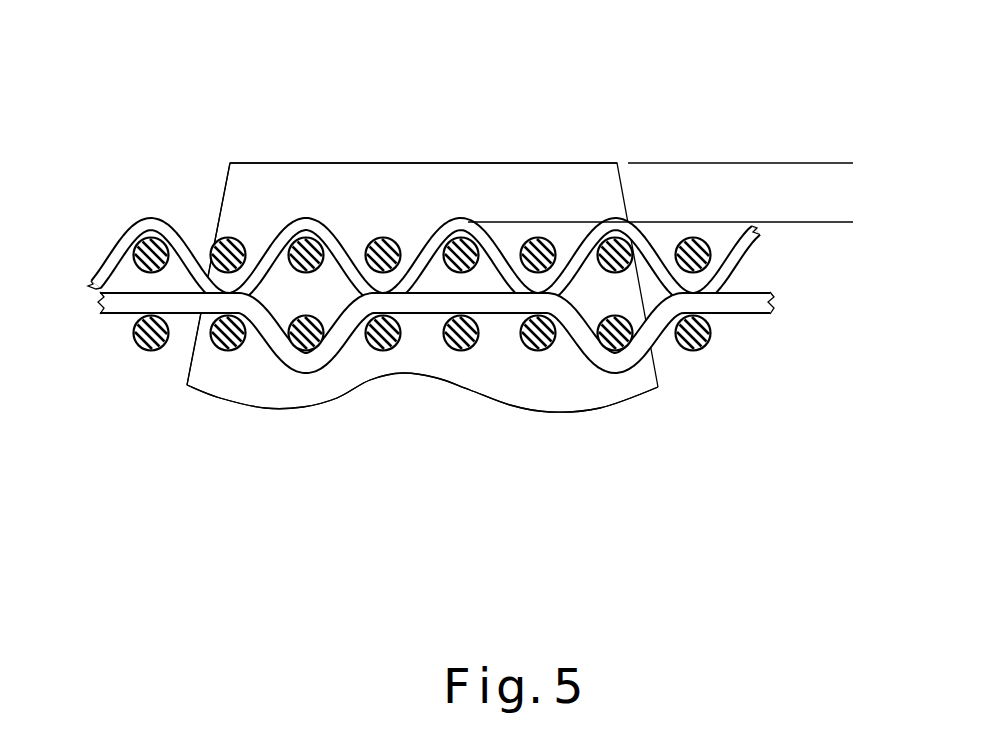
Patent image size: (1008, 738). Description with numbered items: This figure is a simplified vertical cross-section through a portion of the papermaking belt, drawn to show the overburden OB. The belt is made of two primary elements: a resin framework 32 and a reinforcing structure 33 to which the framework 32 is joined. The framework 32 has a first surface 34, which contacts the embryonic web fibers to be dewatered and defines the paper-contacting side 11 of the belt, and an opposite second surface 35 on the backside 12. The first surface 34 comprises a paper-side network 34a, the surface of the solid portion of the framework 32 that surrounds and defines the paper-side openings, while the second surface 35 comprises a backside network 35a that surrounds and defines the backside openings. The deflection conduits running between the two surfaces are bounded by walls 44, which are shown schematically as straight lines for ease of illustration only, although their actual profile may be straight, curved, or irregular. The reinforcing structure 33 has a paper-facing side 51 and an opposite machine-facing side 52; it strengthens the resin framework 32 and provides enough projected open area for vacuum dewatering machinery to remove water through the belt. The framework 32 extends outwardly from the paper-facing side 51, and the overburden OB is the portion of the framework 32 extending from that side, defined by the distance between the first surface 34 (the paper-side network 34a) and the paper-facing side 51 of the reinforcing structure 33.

The paper-contacting side 11 is at (475, 93).
The first surface 34 is at (475, 93).
The paper-side network 34a is at (433, 163).
The backside 12 is at (505, 484).
The second surface 35 is at (505, 484).
The backside network 35a is at (668, 577).
The framework 32 is at (305, 192).
The reinforcing structure 33 is at (381, 268).
The walls 44 is at (222, 200).
The paper-facing side 51 is at (473, 220).
The machine-facing side 52 is at (613, 373).
The overburden OB is at (839, 325).